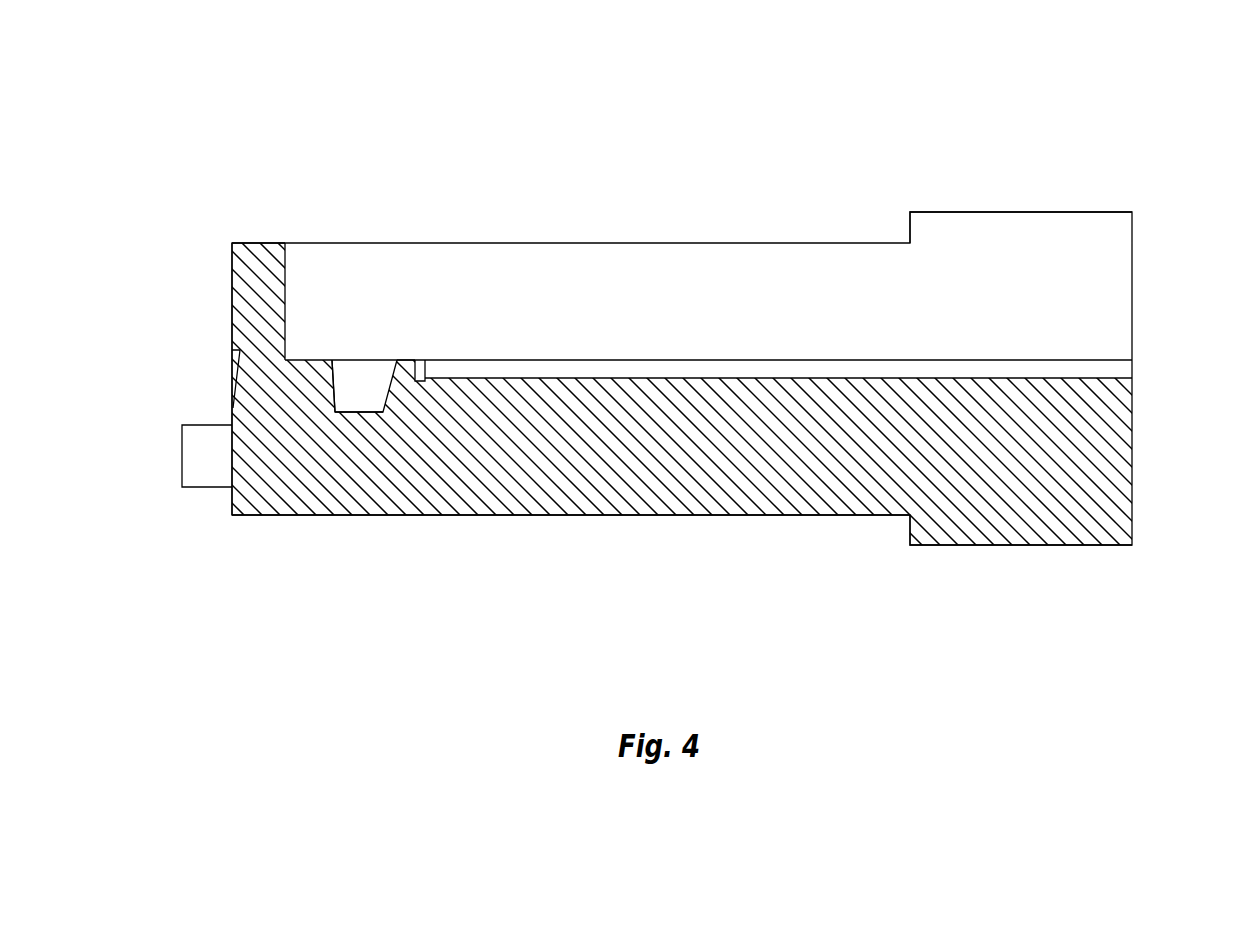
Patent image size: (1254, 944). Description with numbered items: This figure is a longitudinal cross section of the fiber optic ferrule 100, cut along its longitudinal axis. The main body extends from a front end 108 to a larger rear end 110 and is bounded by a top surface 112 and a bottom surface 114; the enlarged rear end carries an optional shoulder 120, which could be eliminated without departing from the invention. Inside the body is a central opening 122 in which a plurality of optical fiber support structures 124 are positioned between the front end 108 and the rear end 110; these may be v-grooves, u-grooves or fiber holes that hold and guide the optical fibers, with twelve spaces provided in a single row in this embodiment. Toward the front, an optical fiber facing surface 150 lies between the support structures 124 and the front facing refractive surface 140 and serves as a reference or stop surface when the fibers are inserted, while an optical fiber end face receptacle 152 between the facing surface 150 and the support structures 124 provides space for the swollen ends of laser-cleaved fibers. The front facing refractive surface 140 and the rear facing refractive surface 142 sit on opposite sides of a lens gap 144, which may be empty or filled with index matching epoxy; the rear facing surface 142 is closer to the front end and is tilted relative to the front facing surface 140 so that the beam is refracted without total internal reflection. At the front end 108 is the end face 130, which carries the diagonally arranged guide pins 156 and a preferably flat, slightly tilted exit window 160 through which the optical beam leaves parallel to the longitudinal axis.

The fiber optic ferrule 100 is at (1138, 142).
The front end 108 is at (170, 328).
The rear end 110 is at (1161, 307).
The top surface 112 is at (259, 242).
The bottom surface 114 is at (773, 515).
The shoulder 120 is at (992, 212).
The central opening 122 is at (559, 343).
The optical fiber support structures 124 is at (1120, 371).
The end face 130 is at (232, 275).
The front facing refractive surface 140 is at (380, 366).
The rear facing refractive surface 142 is at (331, 361).
The lens gap 144 is at (348, 398).
The optical fiber facing surface 150 is at (407, 362).
The optical fiber end face receptacle 152 is at (420, 362).
The guide pins 156 is at (182, 460).
The exit window 160 is at (236, 370).